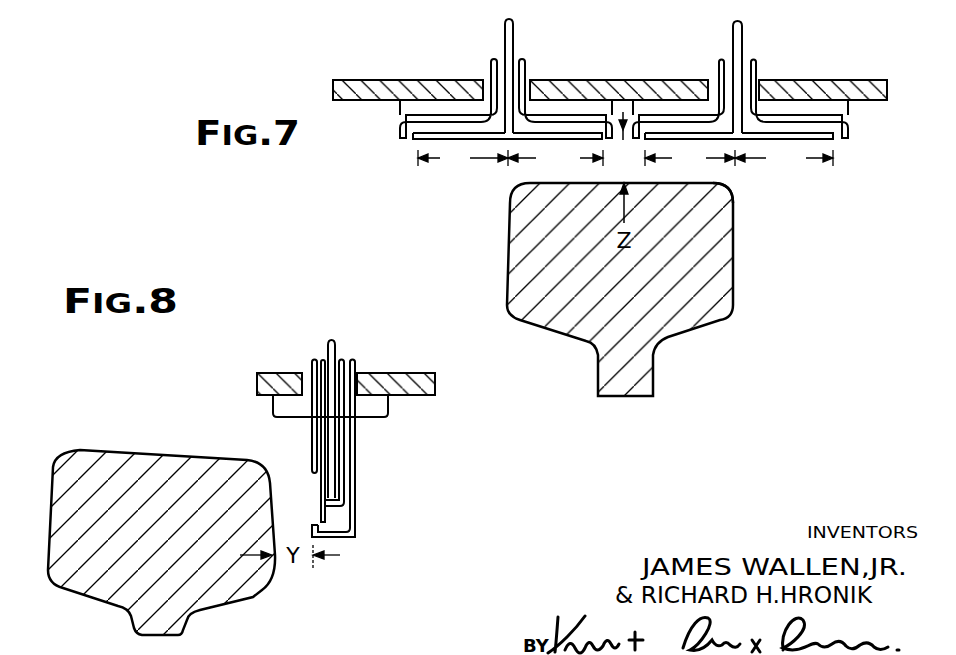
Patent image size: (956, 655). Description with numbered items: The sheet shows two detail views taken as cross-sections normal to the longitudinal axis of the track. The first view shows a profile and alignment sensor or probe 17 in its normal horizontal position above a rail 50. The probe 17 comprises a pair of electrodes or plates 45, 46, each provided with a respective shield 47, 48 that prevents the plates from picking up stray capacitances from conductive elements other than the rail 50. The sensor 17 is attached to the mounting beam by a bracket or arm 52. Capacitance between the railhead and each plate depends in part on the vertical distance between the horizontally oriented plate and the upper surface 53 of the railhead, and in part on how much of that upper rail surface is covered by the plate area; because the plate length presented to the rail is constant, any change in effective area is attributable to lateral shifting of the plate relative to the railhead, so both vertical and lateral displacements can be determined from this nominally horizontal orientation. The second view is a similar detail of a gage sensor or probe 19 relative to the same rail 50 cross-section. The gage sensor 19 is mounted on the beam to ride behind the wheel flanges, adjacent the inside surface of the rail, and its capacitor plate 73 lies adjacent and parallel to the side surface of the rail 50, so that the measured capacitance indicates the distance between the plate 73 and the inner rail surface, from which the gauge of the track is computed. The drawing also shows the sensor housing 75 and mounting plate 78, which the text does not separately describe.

In FIG. 7, the sensor or probe 17 is at (624, 61).
In FIG. 7, the electrode or plate 45 is at (435, 137).
In FIG. 7, the electrode or plate 46 is at (680, 135).
In FIG. 7, the shield 47 is at (565, 118).
In FIG. 7, the shield 48 is at (787, 118).
In FIG. 7, the rail 50 is at (720, 285).
In FIG. 8, the rail 50 is at (167, 477).
In FIG. 7, the bracket or arm 52 is at (848, 100).
In FIG. 7, the upper surface of the railhead 53 is at (710, 183).
In FIG. 8, the gage sensor or probe 19 is at (377, 504).
In FIG. 8, the capacitor plate 73 is at (312, 490).
In FIG. 8, the clamp channel 75 is at (355, 437).
In FIG. 8, the mounting plate 78 is at (396, 383).